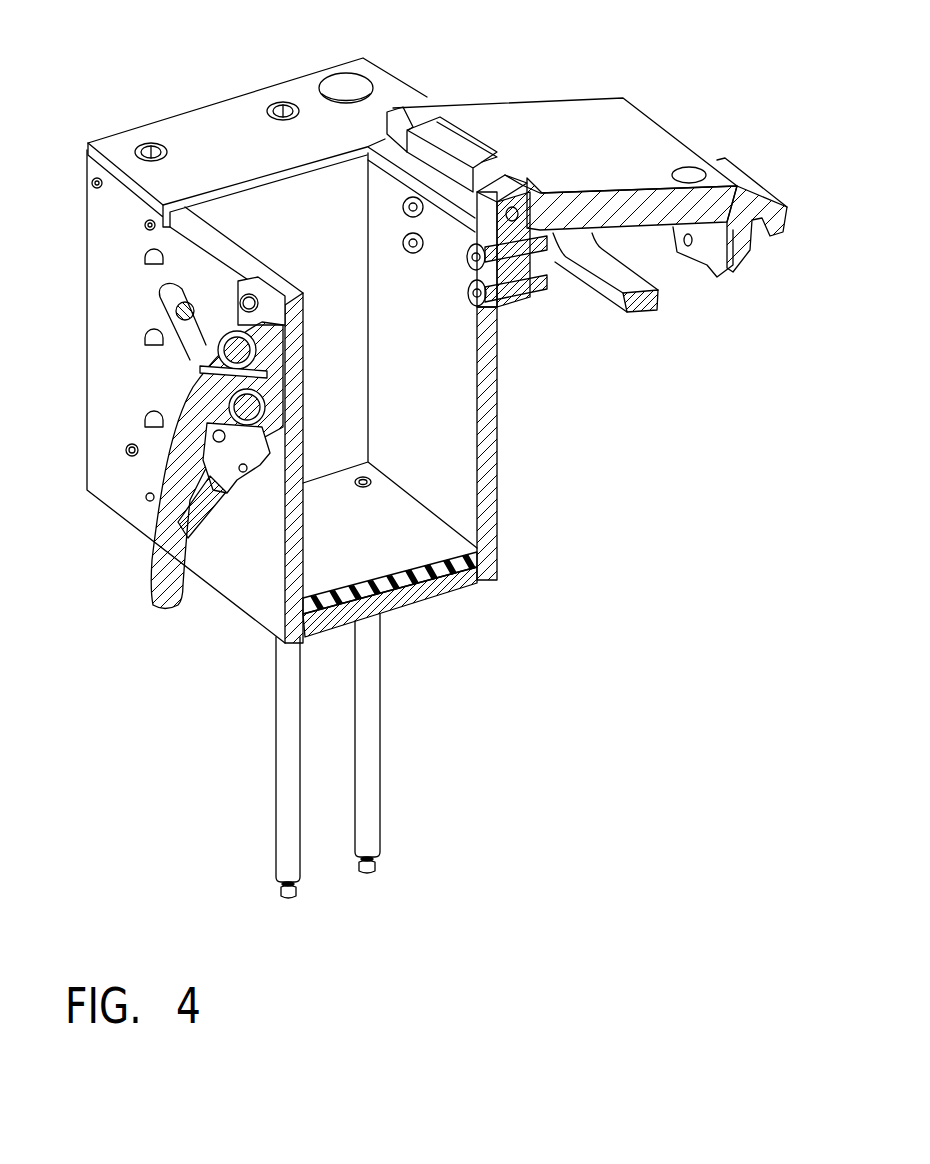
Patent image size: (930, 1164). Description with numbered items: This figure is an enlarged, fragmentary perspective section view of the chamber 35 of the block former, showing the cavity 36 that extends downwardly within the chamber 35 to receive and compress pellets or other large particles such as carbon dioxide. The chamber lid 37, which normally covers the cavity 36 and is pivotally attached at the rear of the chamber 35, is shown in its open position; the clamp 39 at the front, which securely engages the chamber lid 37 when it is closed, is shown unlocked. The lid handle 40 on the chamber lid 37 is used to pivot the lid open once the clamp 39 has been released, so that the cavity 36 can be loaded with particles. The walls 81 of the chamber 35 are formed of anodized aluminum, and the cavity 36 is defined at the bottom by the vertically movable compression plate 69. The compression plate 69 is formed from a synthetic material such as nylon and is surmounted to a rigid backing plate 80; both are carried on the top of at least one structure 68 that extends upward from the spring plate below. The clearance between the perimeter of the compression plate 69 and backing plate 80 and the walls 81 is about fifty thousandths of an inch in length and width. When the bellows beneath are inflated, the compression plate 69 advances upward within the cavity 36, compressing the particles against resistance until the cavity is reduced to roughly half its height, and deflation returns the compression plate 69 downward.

The chamber 35 is at (522, 405).
The cavity 36 is at (441, 278).
The chamber lid 37 is at (640, 137).
The clamp 39 is at (152, 580).
The lid handle 40 is at (617, 301).
The structure 68 is at (275, 732).
The compression plate 69 is at (483, 553).
The backing plate 80 is at (447, 588).
The walls 81 is at (383, 185).